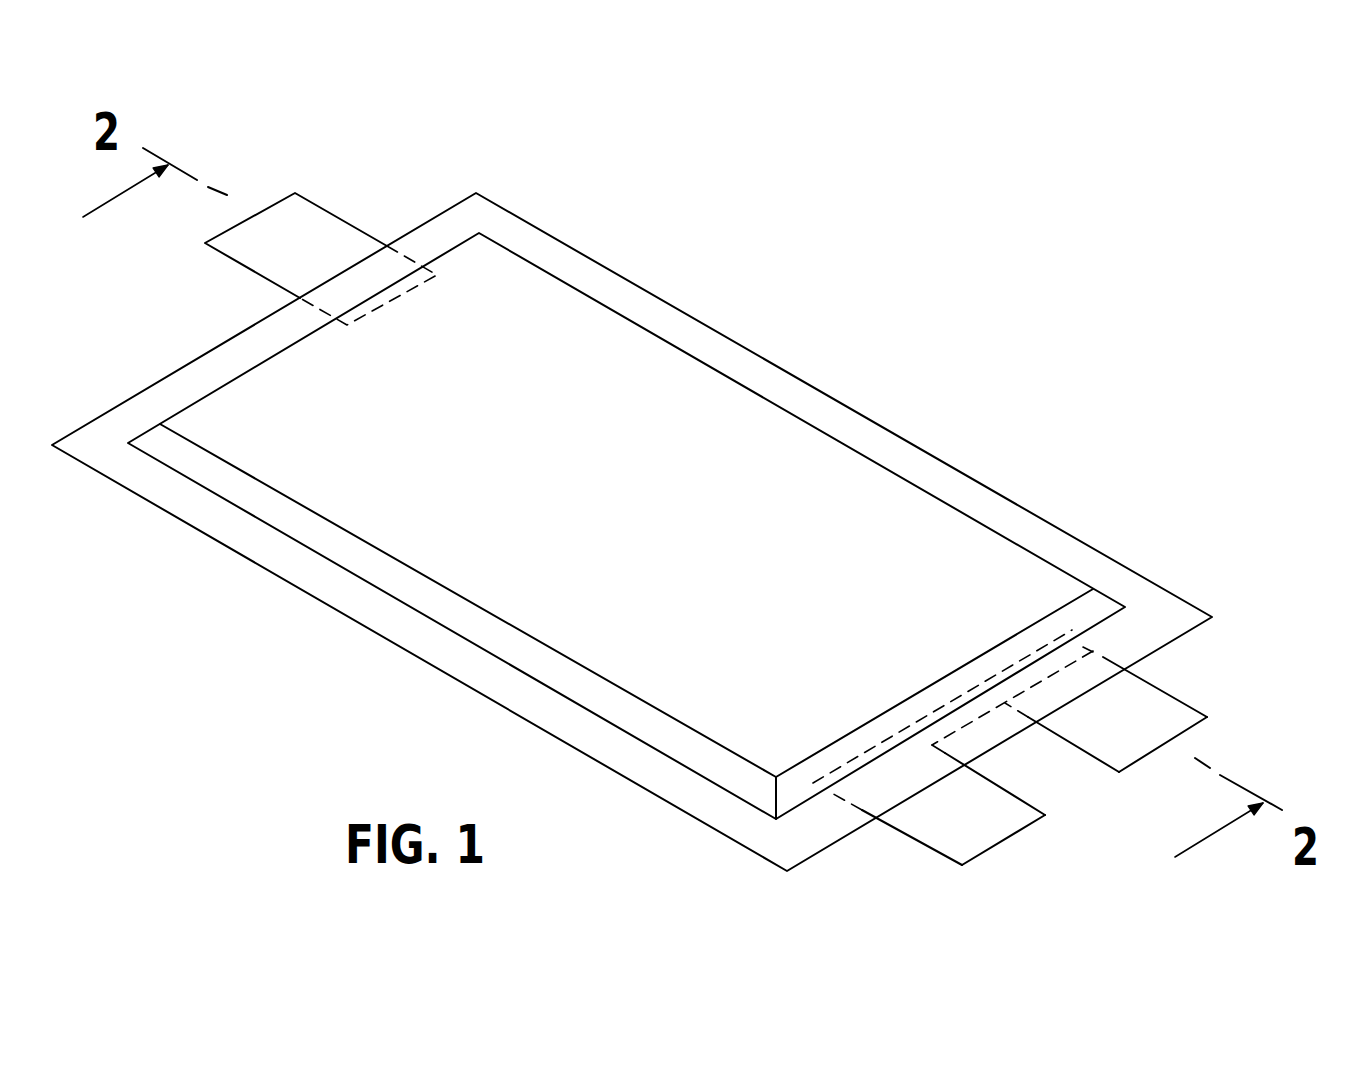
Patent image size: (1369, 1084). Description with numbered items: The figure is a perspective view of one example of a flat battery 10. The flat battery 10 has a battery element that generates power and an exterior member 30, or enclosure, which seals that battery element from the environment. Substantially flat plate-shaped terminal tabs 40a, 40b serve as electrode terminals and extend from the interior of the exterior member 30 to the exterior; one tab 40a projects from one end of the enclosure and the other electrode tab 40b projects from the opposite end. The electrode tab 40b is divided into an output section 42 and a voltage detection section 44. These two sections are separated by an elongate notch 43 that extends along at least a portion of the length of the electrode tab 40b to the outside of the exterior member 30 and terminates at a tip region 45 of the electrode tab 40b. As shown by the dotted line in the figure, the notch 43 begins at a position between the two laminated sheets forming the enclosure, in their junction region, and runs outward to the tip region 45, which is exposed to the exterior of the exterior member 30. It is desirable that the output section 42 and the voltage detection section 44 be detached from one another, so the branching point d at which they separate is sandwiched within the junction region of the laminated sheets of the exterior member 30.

The flat battery 10 is at (935, 230).
The exterior member 30 is at (573, 310).
The terminal tab 40a is at (287, 210).
The electrode tab 40b is at (1242, 717).
The output section 42 is at (1147, 718).
The notch 43 is at (1063, 772).
The voltage detection section 44 is at (990, 828).
The tip region 45 is at (1182, 733).
The branching point d is at (962, 733).